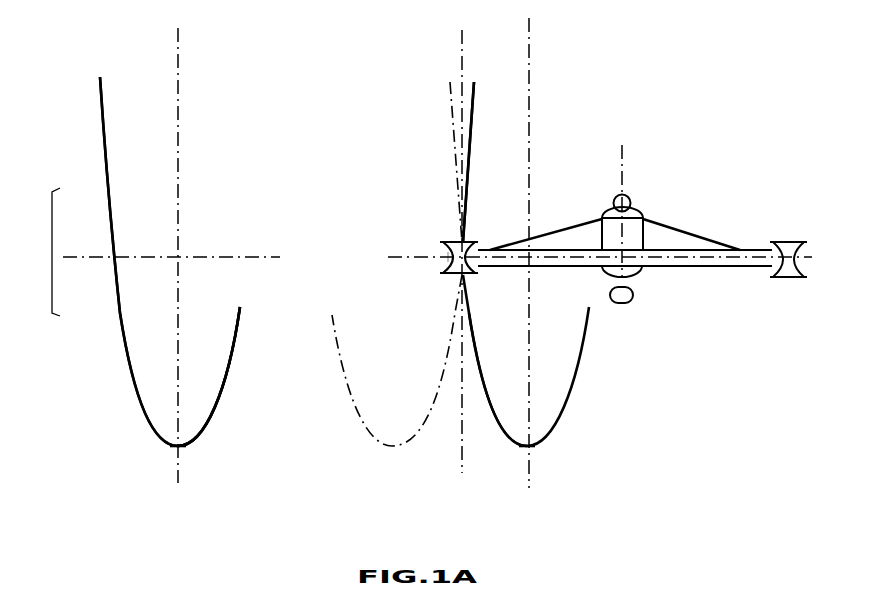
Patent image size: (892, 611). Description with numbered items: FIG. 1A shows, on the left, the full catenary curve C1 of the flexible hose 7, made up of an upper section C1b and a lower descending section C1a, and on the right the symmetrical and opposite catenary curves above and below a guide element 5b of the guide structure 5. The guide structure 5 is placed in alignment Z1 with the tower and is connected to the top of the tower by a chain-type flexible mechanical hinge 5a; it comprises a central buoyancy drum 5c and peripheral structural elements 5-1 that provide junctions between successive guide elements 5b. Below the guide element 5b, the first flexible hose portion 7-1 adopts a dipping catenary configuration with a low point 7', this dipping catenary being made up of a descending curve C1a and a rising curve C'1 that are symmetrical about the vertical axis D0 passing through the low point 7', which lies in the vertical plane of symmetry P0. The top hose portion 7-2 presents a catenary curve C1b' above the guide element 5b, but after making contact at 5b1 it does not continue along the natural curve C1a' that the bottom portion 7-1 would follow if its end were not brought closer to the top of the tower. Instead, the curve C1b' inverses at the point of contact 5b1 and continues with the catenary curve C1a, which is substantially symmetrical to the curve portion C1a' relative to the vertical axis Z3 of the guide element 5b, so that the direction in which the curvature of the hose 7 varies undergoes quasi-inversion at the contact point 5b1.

The flexible hose 7 is at (151, 261).
The low point 7' is at (370, 464).
The first flexible hose portion 7-1 is at (474, 340).
The top hose portion 7-2 is at (468, 162).
The catenary curve C1 is at (41, 252).
The descending curve C1a is at (292, 369).
The catenary curve portion C1b is at (89, 195).
The natural catenary curve C1a' is at (320, 364).
The catenary curve of top hose portion C1b' is at (533, 162).
The rising curve C'1 is at (239, 376).
The vertical plane of symmetry P0 is at (180, 45).
The vertical axis D0 is at (531, 40).
The vertical axis of the guide elements Z3 is at (462, 38).
The axis of the tower Z1 is at (622, 150).
The guide structure 5 is at (700, 192).
The peripheral structural elements 5-1 is at (715, 256).
The flexible mechanical hinge 5a is at (634, 296).
The guide element 5b is at (443, 250).
The point of contact 5b1 is at (447, 258).
The buoyancy drum 5c is at (633, 228).